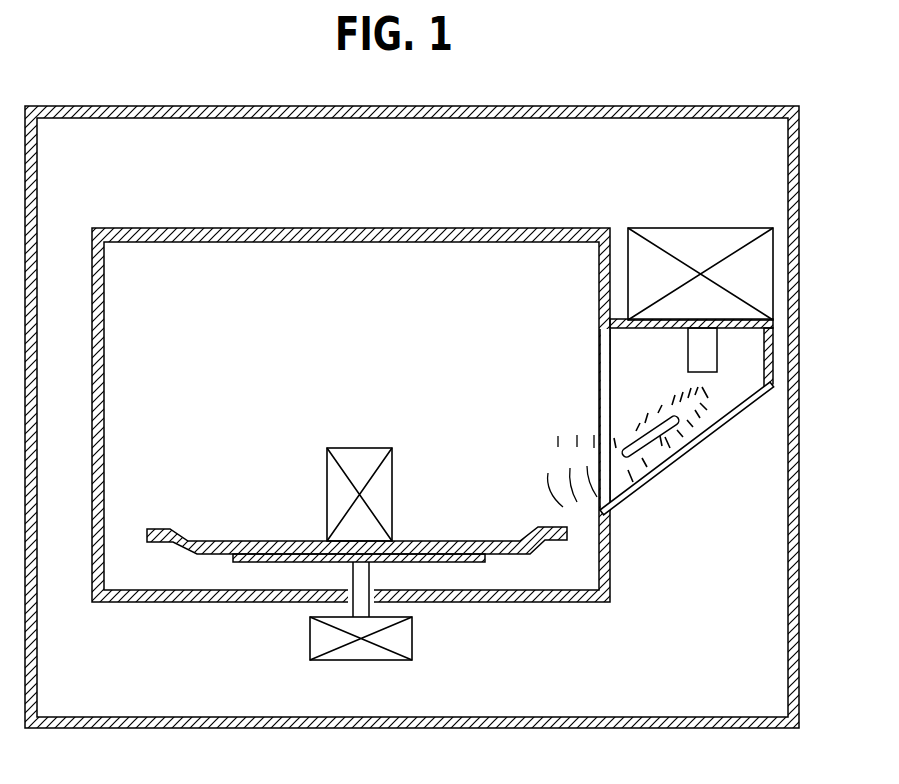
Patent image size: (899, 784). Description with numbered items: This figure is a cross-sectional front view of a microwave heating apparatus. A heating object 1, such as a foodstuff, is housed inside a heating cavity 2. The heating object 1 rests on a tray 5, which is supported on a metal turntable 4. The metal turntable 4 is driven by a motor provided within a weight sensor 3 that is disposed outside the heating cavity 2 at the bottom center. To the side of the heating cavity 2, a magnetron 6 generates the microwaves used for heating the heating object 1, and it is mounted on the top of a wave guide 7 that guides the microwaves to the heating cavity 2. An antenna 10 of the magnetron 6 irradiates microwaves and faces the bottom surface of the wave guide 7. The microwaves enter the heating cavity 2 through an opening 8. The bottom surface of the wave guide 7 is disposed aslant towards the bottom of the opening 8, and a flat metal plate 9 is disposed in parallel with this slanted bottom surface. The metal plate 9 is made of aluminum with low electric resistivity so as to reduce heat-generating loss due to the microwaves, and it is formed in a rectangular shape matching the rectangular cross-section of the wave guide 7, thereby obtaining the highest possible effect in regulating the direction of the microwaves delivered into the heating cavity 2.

The heating object 1 is at (392, 482).
The heating cavity 2 is at (328, 264).
The weight sensor 3 is at (412, 640).
The metal turntable 4 is at (485, 557).
The tray 5 is at (500, 540).
The magnetron 6 is at (773, 263).
The wave guide 7 is at (745, 415).
The opening 8 is at (600, 400).
The metal plate 9 is at (653, 443).
The antenna 10 is at (717, 355).